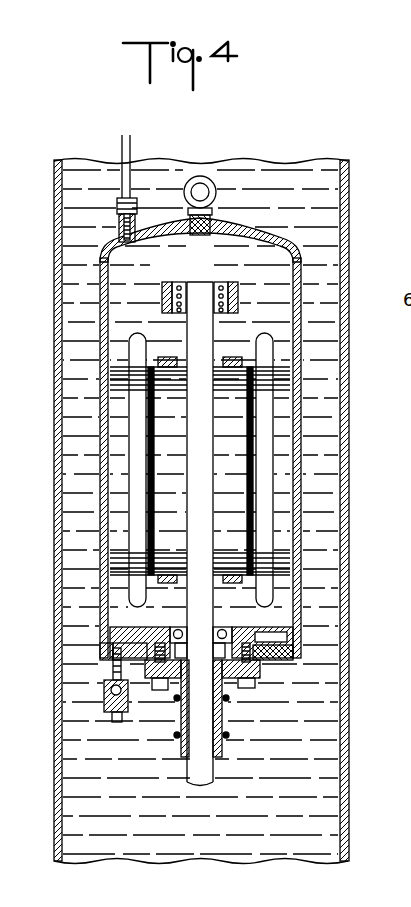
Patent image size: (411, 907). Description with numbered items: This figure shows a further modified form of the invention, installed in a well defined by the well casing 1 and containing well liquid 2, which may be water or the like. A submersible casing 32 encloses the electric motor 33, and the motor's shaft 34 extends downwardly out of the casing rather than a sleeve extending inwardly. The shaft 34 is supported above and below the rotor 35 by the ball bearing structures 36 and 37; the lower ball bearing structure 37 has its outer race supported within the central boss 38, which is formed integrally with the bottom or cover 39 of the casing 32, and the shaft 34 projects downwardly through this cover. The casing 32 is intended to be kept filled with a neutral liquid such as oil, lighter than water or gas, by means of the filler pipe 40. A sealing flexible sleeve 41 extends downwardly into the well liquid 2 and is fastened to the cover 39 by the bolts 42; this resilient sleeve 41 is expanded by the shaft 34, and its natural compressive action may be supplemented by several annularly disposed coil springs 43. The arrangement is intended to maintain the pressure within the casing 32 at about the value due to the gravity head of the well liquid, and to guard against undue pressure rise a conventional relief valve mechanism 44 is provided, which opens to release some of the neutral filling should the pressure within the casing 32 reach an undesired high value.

The well casing 1 is at (348, 263).
The well liquid 2 is at (323, 296).
The submersible casing 32 is at (303, 457).
The electric motor 33 is at (273, 400).
The shaft 34 is at (210, 521).
The rotor 35 is at (205, 455).
The ball bearing structure 36 is at (183, 273).
The lower ball bearing structure 37 is at (232, 627).
The central boss 38 is at (170, 627).
The bottom or cover 39 is at (283, 658).
The filler pipe 40 is at (131, 141).
The sealing flexible sleeve 41 is at (223, 748).
The bolts 42 is at (158, 690).
The coil springs 43 is at (228, 735).
The relief valve mechanism 44 is at (105, 690).